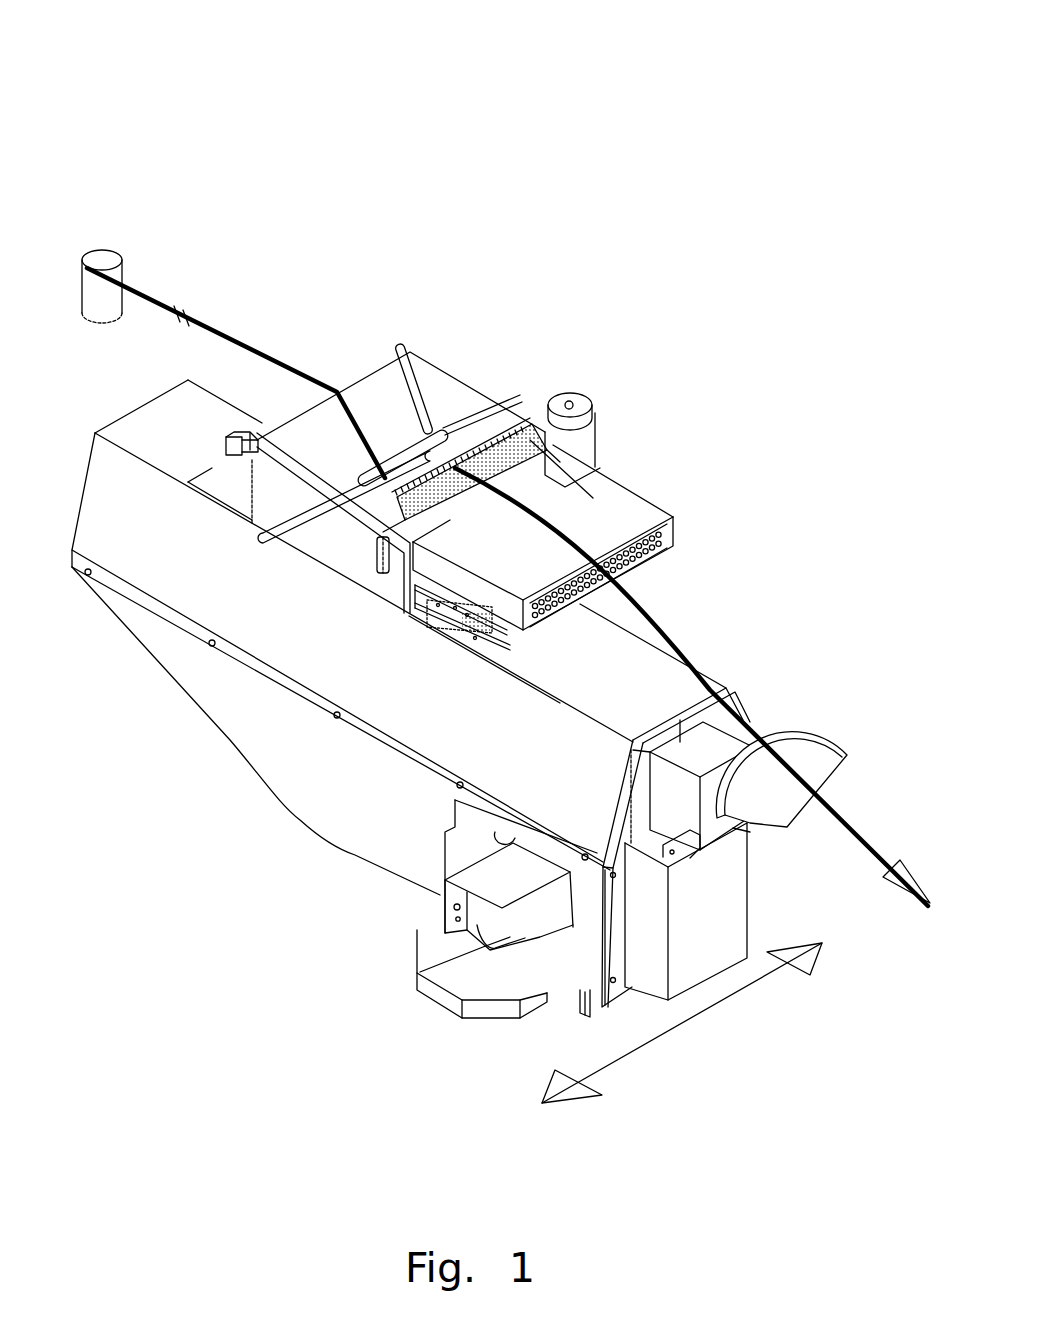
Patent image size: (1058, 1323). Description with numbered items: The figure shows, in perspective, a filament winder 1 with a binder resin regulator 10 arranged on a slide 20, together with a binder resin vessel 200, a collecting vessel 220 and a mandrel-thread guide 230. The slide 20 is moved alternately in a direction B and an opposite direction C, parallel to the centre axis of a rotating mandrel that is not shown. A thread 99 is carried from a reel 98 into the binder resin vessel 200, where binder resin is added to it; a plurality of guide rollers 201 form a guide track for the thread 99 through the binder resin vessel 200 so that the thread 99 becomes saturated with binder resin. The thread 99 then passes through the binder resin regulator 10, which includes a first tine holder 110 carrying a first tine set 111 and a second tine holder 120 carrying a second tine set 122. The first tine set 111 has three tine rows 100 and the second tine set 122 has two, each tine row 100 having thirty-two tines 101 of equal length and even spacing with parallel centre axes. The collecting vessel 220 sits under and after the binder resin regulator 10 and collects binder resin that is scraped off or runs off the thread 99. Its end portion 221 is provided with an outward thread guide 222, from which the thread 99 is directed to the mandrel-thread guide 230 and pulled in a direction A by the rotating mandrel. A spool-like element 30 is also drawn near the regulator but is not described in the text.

The filament winder 1 is at (720, 118).
The binder resin regulator 10 is at (838, 193).
The slide 20 is at (360, 857).
The ribbon spool 30 is at (596, 414).
The reel 98 is at (122, 258).
The thread 99 is at (227, 342).
The tine row 100 is at (513, 365).
The tine 101 is at (594, 337).
The first tine holder 110 is at (547, 420).
The first tine set 111 is at (540, 382).
The second tine holder 120 is at (527, 418).
The second tine set 122 is at (544, 341).
The binder resin vessel 200 is at (422, 352).
The guide roller 201 is at (398, 350).
The collecting vessel 220 is at (633, 487).
The end portion 221 is at (640, 572).
The outward thread guide 222 is at (607, 560).
The mandrel-thread guide 230 is at (847, 752).